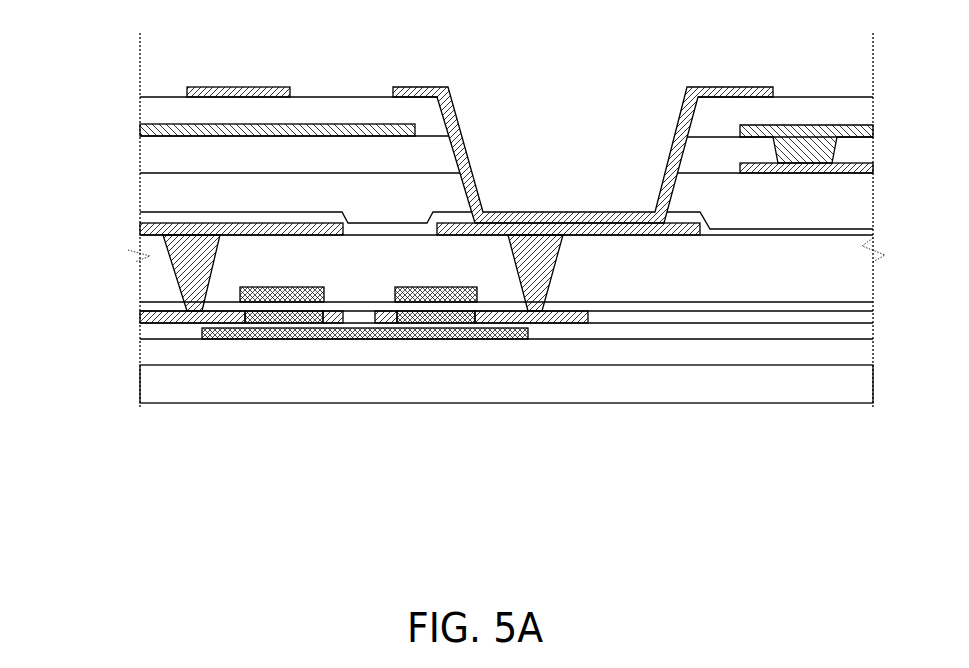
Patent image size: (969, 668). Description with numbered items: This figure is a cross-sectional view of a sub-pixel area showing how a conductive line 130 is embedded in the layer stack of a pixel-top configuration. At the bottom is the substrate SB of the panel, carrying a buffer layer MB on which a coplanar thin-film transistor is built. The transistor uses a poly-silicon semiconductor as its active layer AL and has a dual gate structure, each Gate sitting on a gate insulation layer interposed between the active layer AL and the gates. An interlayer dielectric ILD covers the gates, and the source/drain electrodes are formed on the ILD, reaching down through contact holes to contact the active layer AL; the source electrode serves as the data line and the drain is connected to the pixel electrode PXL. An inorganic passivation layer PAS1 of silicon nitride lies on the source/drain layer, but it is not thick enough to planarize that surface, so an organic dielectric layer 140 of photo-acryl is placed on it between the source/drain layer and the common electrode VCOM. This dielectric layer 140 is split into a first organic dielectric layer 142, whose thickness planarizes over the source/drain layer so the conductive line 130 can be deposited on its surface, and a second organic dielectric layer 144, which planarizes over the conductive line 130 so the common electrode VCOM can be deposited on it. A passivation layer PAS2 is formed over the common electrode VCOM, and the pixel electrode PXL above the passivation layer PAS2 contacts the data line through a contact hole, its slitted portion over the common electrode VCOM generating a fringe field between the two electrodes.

The pixel electrode PXL is at (237, 78).
The common electrode VCOM is at (139, 119).
The dielectric layer 140 is at (444, 173).
The second organic dielectric layer 144 is at (506, 153).
The first organic dielectric layer 142 is at (506, 190).
The conductive line 130 is at (744, 173).
The inorganic passivation layer PAS1 is at (163, 221).
The passivation layer PAS2 is at (814, 97).
The interlayer dielectric ILD is at (506, 258).
The gate Gate is at (442, 286).
The active layer AL is at (278, 324).
The buffer layer MB is at (506, 343).
The substrate SB is at (506, 384).